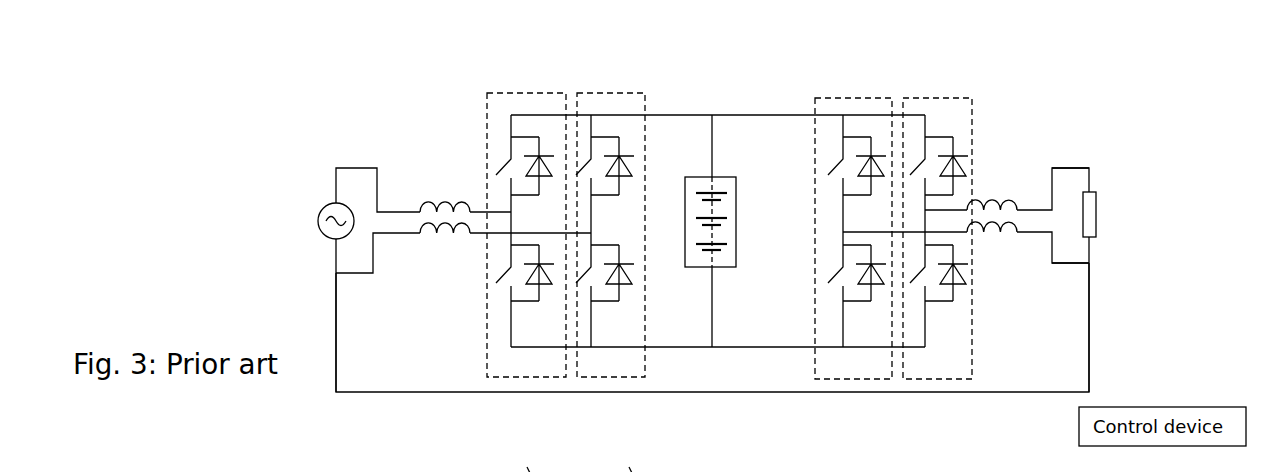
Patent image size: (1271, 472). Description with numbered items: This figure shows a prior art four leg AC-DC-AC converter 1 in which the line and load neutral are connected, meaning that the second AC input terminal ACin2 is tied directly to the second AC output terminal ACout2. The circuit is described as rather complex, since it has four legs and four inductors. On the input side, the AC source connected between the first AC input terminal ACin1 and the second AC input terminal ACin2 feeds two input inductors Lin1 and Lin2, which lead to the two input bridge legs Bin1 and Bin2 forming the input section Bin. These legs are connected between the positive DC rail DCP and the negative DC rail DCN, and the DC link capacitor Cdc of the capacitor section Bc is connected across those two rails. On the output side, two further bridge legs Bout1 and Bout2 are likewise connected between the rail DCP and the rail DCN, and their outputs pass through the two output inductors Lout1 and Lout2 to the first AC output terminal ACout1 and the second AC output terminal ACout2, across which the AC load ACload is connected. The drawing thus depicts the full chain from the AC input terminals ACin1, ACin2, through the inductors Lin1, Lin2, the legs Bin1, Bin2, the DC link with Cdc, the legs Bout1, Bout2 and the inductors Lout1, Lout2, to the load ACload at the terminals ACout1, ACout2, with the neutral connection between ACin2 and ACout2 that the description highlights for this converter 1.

The power converter system (prior art) 1 is at (410, 97).
The AC input terminal 1 / AC source ACin1 is at (357, 188).
The second AC input terminal ACin2 is at (366, 332).
The input inductor 1 Lin1 is at (445, 192).
The input inductor 2 Lin2 is at (445, 247).
The input bridge leg 1 Bin1 is at (520, 92).
The input bridge leg 2 Bin2 is at (618, 92).
The output bridge leg 1 Bout1 is at (847, 97).
The output bridge leg 2 Bout2 is at (945, 97).
The positive DC link rail DCP is at (718, 101).
The negative DC link rail DCN is at (718, 358).
The DC link capacitor Cdc is at (717, 231).
The output inductor 1 Lout1 is at (1006, 191).
The output inductor 2 Lout2 is at (1006, 241).
The AC output terminal 1 ACout1 is at (1081, 148).
The second AC output terminal ACout2 is at (1108, 278).
The AC load ACload is at (1127, 214).
The input converter Bin is at (530, 437).
The DC link capacitor section Bc is at (618, 437).